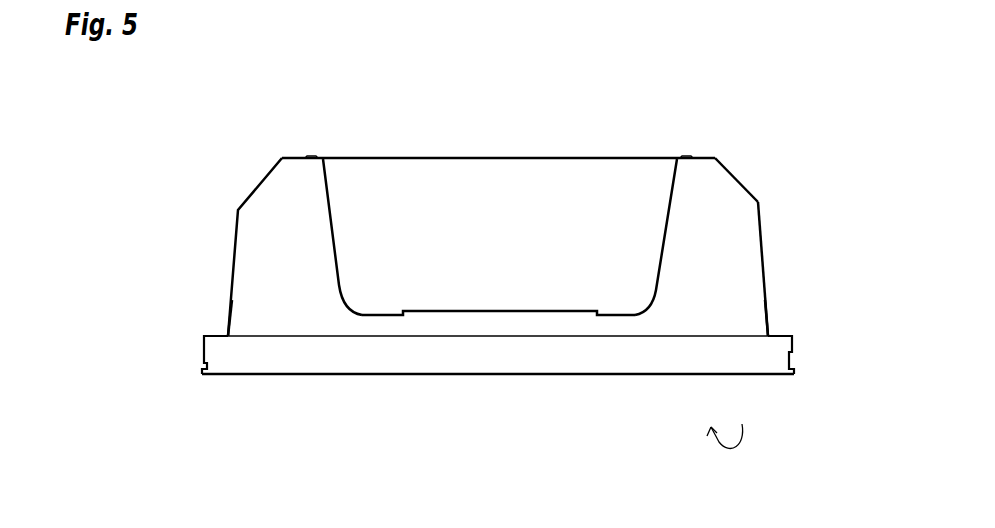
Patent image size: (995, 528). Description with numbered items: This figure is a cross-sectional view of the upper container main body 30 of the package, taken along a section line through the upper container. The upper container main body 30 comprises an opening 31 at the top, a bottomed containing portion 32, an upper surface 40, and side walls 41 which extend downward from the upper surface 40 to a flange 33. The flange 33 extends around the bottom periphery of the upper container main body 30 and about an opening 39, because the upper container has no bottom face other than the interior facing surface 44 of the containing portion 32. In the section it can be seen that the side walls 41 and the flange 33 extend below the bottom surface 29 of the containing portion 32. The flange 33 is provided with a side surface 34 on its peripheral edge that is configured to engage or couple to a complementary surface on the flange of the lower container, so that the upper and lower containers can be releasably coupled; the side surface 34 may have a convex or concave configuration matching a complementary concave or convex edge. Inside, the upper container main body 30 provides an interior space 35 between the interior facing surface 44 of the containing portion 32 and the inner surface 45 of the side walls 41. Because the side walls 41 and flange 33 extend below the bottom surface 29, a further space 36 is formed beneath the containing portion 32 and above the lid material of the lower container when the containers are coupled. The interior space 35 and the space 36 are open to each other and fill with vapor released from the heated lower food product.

The bottom surface 29 is at (505, 311).
The upper container main body 30 is at (298, 158).
The opening 31 is at (447, 157).
The containing portion 32 is at (652, 298).
The flange 33 is at (203, 340).
The side surface 34 is at (203, 357).
The interior space 35 is at (712, 252).
The space 36 is at (488, 327).
The opening 39 is at (734, 426).
The upper surface 40 is at (697, 160).
The side walls 41 is at (238, 210).
The interior facing surface 44 is at (338, 282).
The inner surface 45 is at (232, 303).